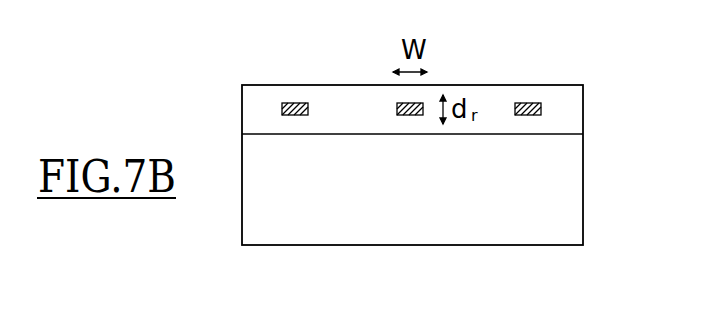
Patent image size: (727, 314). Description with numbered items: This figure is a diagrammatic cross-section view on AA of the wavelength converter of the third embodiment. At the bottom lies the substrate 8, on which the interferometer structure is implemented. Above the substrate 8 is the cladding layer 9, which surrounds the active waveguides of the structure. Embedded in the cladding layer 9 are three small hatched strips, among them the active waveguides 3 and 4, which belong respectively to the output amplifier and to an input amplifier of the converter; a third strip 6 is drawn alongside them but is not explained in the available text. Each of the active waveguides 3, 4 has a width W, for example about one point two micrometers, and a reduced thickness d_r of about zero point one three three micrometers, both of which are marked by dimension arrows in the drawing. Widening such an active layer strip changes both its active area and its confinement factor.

The active waveguide 3 is at (398, 108).
The active waveguide 4 is at (525, 103).
The electrode 6 is at (293, 103).
The substrate 8 is at (565, 175).
The cladding layer 9 is at (570, 110).